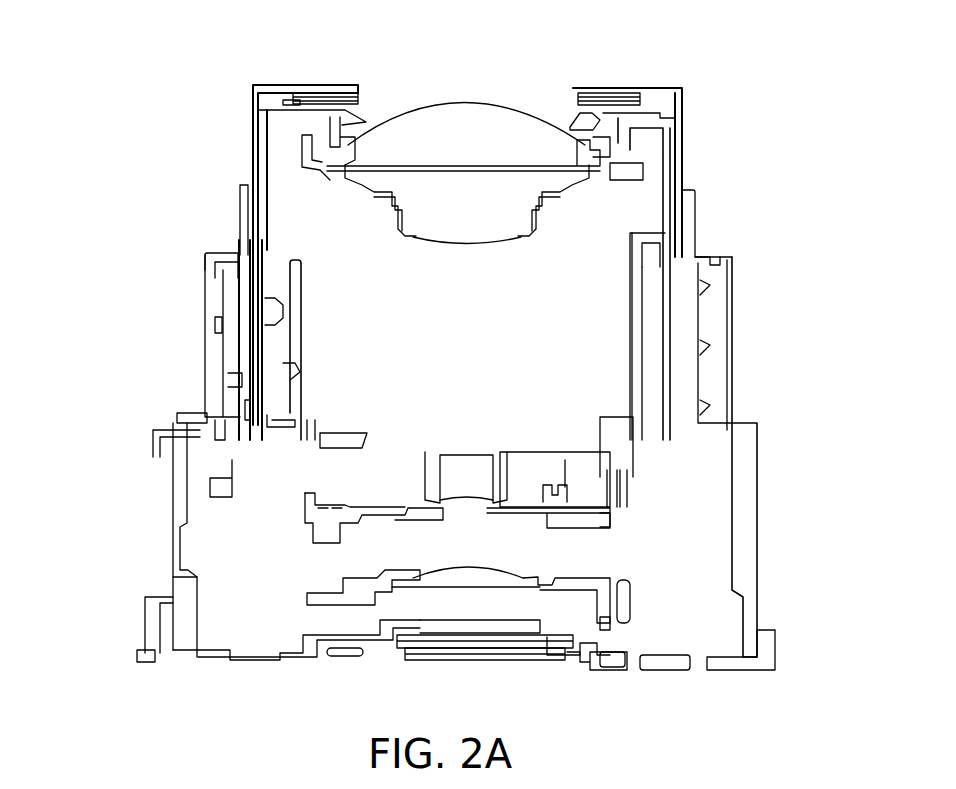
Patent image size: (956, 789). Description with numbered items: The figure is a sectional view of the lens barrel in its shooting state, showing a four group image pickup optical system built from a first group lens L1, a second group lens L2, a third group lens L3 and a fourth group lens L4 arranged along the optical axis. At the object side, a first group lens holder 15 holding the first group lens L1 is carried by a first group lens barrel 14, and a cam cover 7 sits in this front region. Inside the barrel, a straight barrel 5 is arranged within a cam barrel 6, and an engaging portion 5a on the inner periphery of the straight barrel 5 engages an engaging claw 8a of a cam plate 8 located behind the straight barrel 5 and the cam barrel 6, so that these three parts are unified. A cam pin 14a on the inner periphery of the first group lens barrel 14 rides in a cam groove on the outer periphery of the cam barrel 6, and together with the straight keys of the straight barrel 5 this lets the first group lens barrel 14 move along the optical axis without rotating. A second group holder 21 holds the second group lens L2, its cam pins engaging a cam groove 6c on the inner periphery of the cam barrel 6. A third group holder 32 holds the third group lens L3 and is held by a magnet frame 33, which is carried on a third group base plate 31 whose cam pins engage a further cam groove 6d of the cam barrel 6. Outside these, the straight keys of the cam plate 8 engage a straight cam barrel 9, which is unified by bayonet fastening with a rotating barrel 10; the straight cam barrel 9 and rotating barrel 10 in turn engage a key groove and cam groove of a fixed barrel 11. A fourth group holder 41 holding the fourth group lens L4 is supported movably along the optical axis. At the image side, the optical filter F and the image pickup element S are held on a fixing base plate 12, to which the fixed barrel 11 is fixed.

The first group lens barrel 14 is at (267, 122).
The cam cover 7 is at (240, 220).
The cam groove 6d is at (233, 252).
The straight barrel 5 is at (208, 263).
The cam barrel 6 is at (283, 297).
The cam pin 14a is at (255, 297).
The straight cam barrel 9 is at (275, 315).
The rotating barrel 10 is at (295, 357).
The cam groove 6c is at (300, 373).
The engaging portion 5a is at (260, 400).
The engaging claw 8a is at (255, 425).
The cam plate 8 is at (240, 407).
The fixed barrel 11 is at (175, 577).
The fixing base plate 12 is at (167, 652).
The first group lens L1 is at (428, 133).
The second group lens L2 is at (502, 207).
The first group lens holder 15 is at (683, 112).
The second group holder 21 is at (577, 187).
The third group lens L3 is at (480, 467).
The third group holder 32 is at (572, 468).
The magnet frame 33 is at (560, 476).
The third group base plate 31 is at (690, 450).
The fourth group lens L4 is at (493, 578).
The fourth group holder 41 is at (590, 608).
The optical filter F is at (450, 622).
The image pickup element S is at (475, 652).